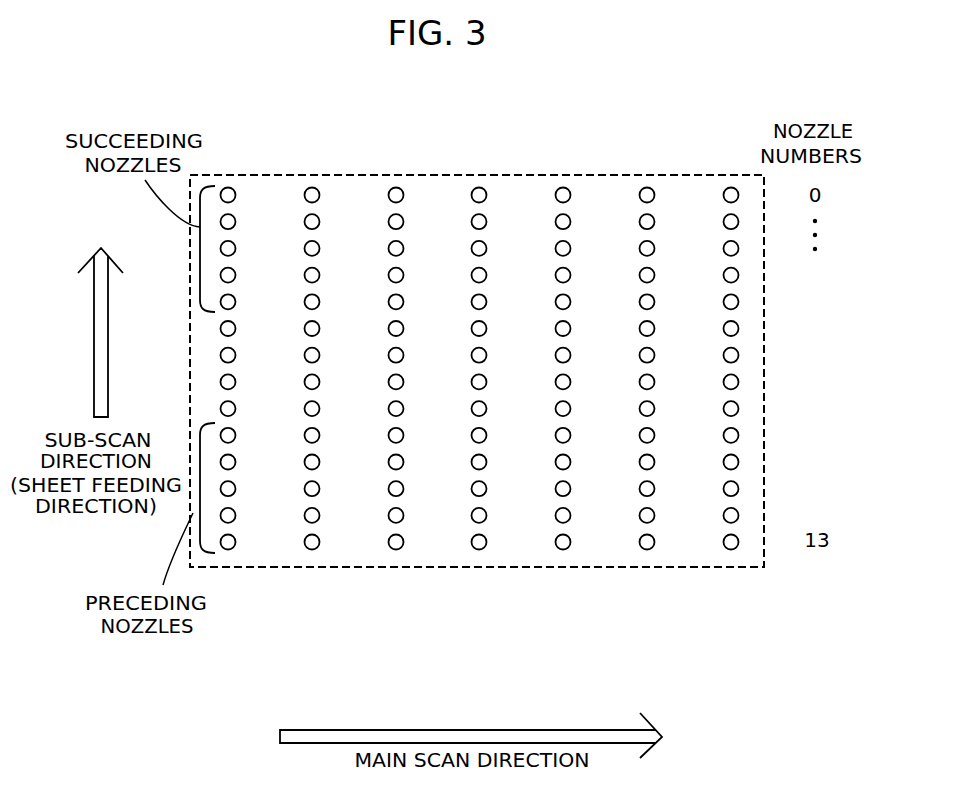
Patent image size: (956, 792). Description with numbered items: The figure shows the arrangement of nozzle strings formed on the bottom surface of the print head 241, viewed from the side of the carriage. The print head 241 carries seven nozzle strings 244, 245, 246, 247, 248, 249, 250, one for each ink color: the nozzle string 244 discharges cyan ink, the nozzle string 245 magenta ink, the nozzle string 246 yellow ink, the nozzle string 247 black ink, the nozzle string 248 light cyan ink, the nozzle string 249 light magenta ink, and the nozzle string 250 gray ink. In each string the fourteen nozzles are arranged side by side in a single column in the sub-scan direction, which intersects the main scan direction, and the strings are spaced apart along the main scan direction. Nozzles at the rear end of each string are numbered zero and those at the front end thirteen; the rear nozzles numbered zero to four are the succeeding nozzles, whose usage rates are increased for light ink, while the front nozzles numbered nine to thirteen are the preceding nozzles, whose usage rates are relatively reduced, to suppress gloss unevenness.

The print head 241 is at (268, 175).
The nozzle string 244 is at (232, 561).
The nozzle string 245 is at (316, 561).
The nozzle string 246 is at (400, 561).
The nozzle string 247 is at (483, 561).
The nozzle string 248 is at (567, 561).
The nozzle string 249 is at (651, 561).
The nozzle string 250 is at (735, 561).